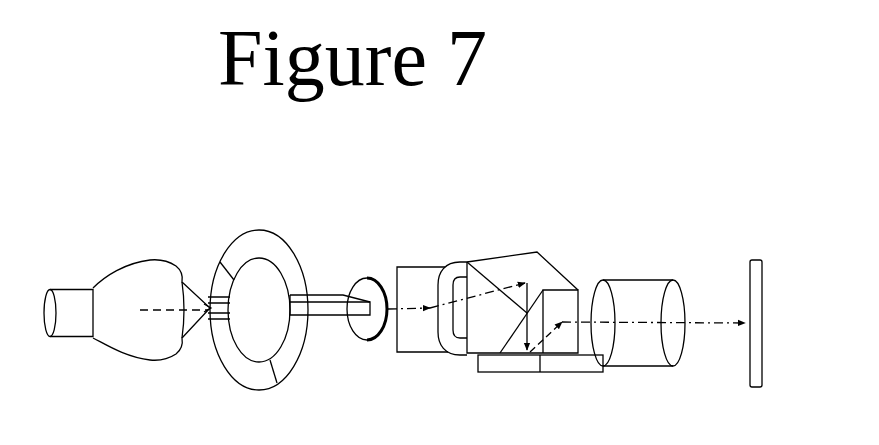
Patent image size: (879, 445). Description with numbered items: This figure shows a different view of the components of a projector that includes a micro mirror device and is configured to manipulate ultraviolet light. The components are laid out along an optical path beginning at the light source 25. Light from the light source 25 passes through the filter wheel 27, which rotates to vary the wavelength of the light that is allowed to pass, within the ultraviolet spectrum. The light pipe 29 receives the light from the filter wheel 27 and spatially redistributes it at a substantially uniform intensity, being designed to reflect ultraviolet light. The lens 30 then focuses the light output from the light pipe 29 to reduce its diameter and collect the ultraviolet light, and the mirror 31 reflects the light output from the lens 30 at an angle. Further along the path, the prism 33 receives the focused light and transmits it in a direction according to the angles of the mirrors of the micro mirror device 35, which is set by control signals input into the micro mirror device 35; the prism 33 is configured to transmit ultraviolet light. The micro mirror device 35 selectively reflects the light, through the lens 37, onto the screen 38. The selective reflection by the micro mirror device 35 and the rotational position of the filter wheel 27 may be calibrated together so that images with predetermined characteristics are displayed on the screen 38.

The light source 25 is at (116, 267).
The filter wheel 27 is at (232, 245).
The light pipe 29 is at (327, 292).
The lens 30 is at (370, 278).
The mirror 31 is at (417, 265).
The prism 33 is at (512, 251).
The micro mirror device 35 is at (508, 373).
The lens 37 is at (632, 278).
The screen 38 is at (756, 258).